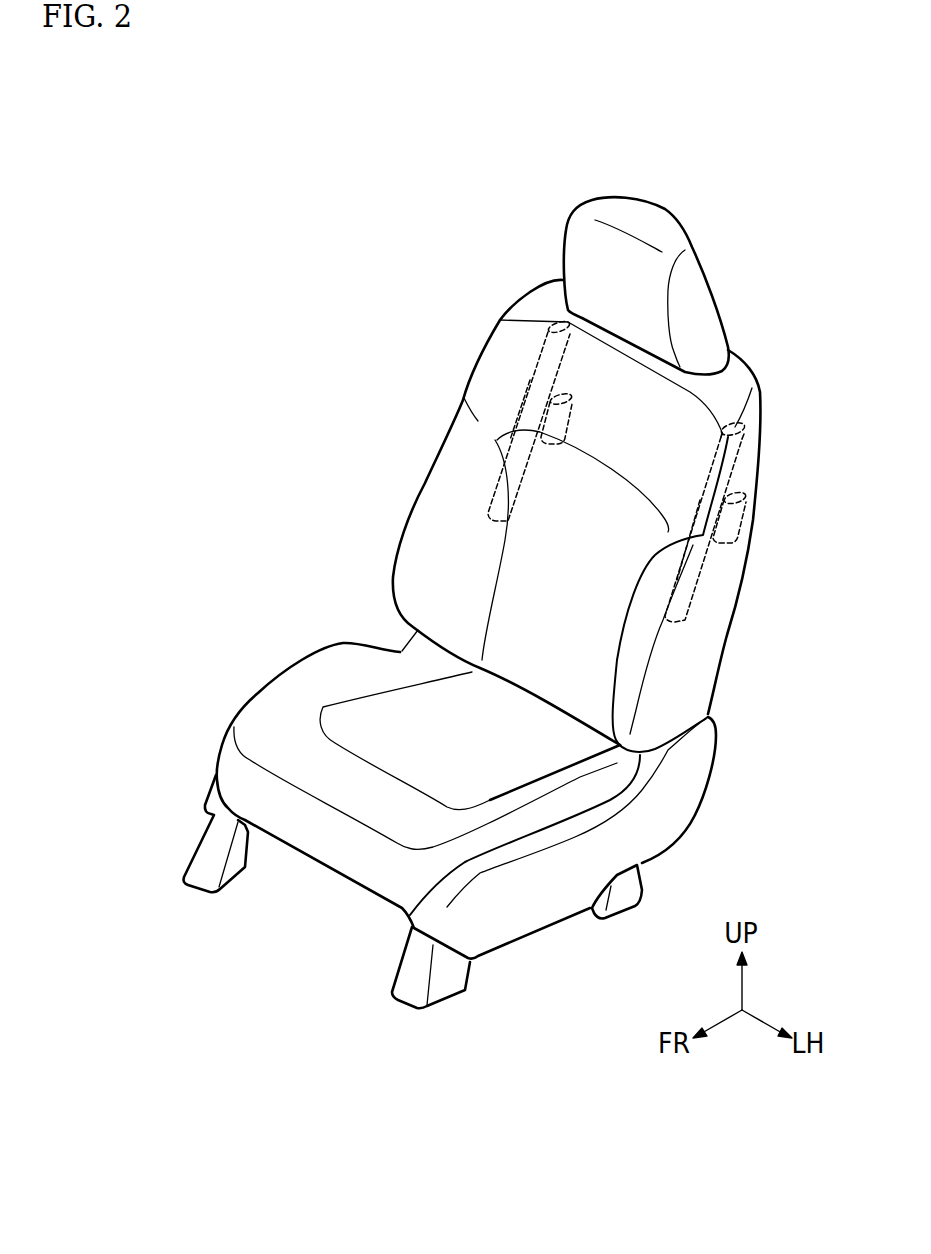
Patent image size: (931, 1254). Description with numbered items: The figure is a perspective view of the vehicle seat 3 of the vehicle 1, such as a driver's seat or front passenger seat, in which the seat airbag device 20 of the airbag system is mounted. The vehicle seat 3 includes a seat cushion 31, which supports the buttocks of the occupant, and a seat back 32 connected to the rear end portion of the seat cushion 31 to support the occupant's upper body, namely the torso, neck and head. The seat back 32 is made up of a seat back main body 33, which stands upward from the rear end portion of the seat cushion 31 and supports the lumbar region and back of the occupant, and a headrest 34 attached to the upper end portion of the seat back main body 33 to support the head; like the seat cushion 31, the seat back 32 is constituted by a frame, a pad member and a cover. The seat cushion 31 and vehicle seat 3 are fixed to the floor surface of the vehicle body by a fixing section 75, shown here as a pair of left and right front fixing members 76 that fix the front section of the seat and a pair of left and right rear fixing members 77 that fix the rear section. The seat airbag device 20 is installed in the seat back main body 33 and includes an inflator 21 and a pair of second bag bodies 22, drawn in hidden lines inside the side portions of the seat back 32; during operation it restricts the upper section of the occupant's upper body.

The vehicle 1 is at (370, 190).
The vehicle seat 3 is at (406, 473).
The seat airbag device 20 is at (753, 456).
The inflator 21 is at (566, 388).
The second bag bodies 22 is at (548, 347).
The seat cushion 31 is at (323, 686).
The seat back 32 is at (455, 440).
The seat back main body 33 is at (730, 584).
The headrest 34 is at (633, 222).
The fixing section 75 is at (503, 941).
The front fixing members 76 is at (417, 982).
The rear fixing members 77 is at (643, 883).